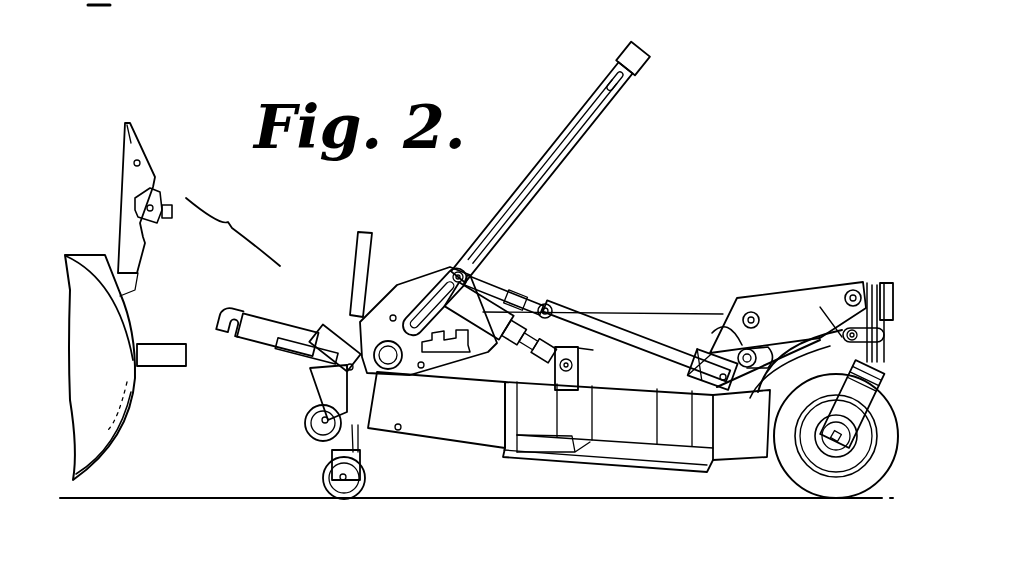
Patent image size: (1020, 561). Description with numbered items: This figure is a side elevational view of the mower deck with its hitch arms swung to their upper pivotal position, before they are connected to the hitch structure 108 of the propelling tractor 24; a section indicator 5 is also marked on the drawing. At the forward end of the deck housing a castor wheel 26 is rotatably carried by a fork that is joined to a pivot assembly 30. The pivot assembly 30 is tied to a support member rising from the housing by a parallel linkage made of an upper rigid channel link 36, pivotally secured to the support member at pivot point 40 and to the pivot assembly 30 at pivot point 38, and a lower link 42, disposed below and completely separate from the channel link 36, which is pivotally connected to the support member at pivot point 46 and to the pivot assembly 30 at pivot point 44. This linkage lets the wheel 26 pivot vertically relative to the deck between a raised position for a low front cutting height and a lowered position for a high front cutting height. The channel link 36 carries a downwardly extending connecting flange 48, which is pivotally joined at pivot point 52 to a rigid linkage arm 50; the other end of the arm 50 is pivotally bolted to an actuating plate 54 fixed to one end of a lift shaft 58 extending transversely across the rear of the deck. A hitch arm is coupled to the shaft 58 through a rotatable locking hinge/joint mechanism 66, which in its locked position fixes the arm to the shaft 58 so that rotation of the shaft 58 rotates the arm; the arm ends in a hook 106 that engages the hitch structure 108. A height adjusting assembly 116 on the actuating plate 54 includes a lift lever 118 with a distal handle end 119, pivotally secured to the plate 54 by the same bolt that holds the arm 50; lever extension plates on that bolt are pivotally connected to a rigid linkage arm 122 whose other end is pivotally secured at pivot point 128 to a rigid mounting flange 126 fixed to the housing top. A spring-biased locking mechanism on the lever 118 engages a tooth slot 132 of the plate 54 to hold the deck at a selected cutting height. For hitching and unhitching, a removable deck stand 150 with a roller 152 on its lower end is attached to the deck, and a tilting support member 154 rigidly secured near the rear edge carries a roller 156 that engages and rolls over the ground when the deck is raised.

The tractor 24 is at (97, 244).
The section line FIG. 5 is at (272, 200).
The castor wheel 26 is at (850, 488).
The pivot assembly 30 is at (882, 284).
The upper rigid channel link 36 is at (780, 291).
The pivot point 38 is at (852, 290).
The pivot point 40 is at (748, 312).
The lower link 42 is at (842, 350).
The pivot point 44 is at (883, 342).
The pivot point 46 is at (722, 336).
The connecting flange 48 is at (636, 427).
The linkage arm 50 is at (586, 312).
The pivot point 52 is at (732, 391).
The actuating plate 54 is at (431, 278).
The lift shaft 58 is at (396, 386).
The locking hinge/joint mechanism 66 is at (322, 372).
The hook 106 is at (242, 308).
The hitch structure 108 is at (192, 343).
The height adjusting assembly 116 is at (476, 208).
The lift lever 118 is at (607, 115).
The handle end 119 is at (645, 47).
The rigid linkage arm 122 is at (512, 296).
The mounting flange 126 is at (587, 347).
The pivot point 128 is at (558, 384).
The tooth slot 132 is at (462, 358).
The deck stand 150 is at (354, 247).
The roller 152 is at (365, 491).
The tilting support member 154 is at (332, 387).
The roller 156 is at (316, 440).